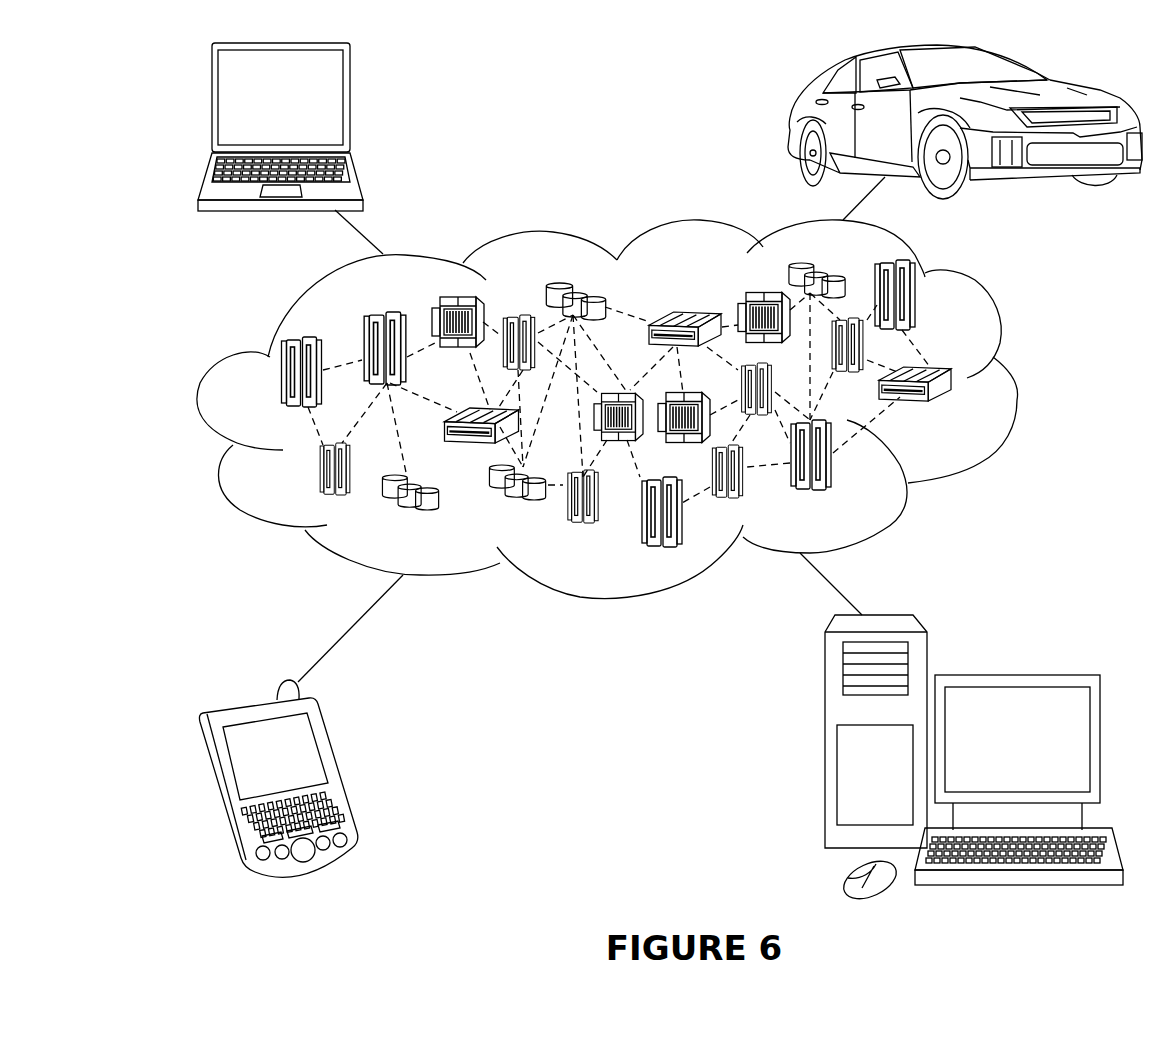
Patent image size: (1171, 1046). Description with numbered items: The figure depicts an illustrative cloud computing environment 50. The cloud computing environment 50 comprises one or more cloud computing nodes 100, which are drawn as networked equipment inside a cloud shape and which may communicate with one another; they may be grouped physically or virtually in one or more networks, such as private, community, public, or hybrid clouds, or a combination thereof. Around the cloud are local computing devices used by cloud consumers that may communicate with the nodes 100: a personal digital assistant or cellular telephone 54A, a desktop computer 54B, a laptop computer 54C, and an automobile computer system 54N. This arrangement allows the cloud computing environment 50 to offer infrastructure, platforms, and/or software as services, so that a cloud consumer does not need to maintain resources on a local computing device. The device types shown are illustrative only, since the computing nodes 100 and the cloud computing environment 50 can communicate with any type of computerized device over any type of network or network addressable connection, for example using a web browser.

The cloud computing environment 50 is at (1017, 385).
The cloud computing nodes 100 is at (962, 415).
The personal digital assistant (PDA) or cellular telephone 54A is at (342, 768).
The desktop computer 54B is at (1015, 672).
The laptop computer 54C is at (350, 105).
The automobile computer system 54N is at (793, 118).